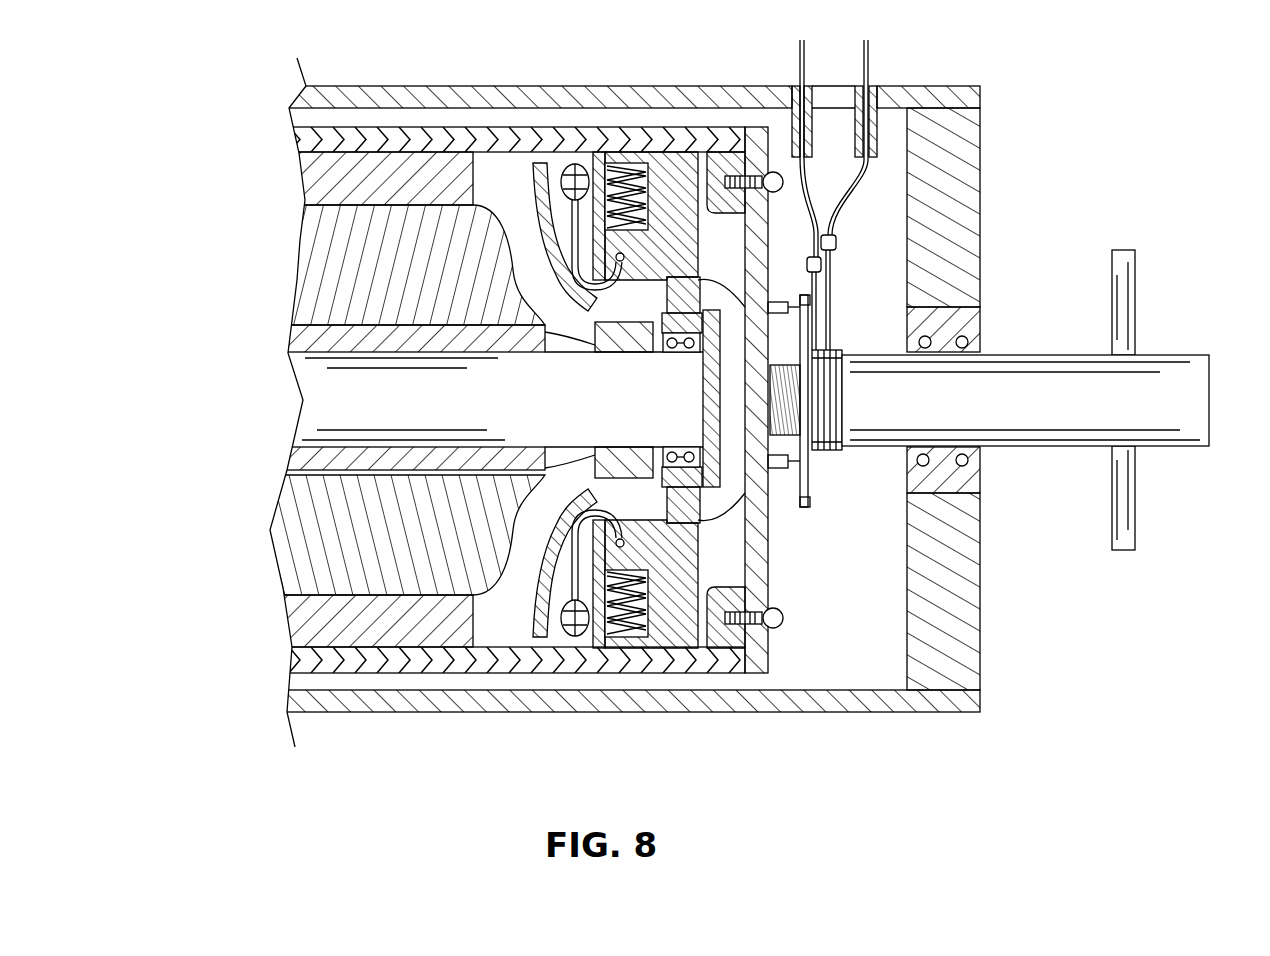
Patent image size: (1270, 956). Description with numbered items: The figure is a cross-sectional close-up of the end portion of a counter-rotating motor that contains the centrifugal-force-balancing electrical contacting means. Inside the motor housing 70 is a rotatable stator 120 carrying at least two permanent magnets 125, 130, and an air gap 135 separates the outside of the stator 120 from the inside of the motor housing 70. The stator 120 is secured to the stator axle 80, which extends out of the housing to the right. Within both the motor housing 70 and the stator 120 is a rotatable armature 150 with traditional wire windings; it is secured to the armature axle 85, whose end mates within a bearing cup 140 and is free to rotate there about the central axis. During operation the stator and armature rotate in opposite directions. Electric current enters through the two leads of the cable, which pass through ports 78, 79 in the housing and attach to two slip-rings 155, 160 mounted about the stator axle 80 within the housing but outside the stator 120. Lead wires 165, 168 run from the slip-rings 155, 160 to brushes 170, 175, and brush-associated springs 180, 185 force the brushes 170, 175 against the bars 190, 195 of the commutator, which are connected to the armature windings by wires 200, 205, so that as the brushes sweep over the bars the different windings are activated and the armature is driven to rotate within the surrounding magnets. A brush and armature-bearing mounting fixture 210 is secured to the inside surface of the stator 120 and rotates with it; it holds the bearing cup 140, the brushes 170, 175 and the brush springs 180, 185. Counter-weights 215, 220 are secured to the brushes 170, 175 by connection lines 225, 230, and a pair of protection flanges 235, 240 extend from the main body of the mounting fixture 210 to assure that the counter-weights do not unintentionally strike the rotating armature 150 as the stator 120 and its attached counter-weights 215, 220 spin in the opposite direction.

The motor housing 70 is at (372, 86).
The port 78 is at (810, 85).
The port 79 is at (880, 87).
The stator axle 80 is at (1185, 448).
The armature axle 85 is at (312, 422).
The rotatable stator 120 is at (298, 140).
The magnet 125 is at (300, 619).
The magnet 130 is at (308, 183).
The air gap 135 is at (815, 668).
The bearing cup 140 is at (683, 449).
The rotatable armature 150 is at (282, 530).
The slip-ring 155 is at (835, 258).
The slip-ring 160 is at (818, 334).
The lead wire 165 is at (707, 357).
The lead wire 168 is at (703, 495).
The brush 170 is at (607, 153).
The brush 175 is at (655, 515).
The brush spring 180 is at (615, 237).
The brush spring 185 is at (617, 637).
The commutator bar 190 is at (630, 346).
The commutator bar 195 is at (612, 457).
The wire 200 is at (548, 330).
The wire 205 is at (548, 478).
The brush and armature-bearing mounting fixture 210 is at (677, 153).
The counter-weight 215 is at (560, 163).
The counter-weight 220 is at (572, 637).
The connection line 225 is at (570, 218).
The connection line 230 is at (590, 545).
The protection flange 235 is at (550, 240).
The protection flange 240 is at (538, 580).